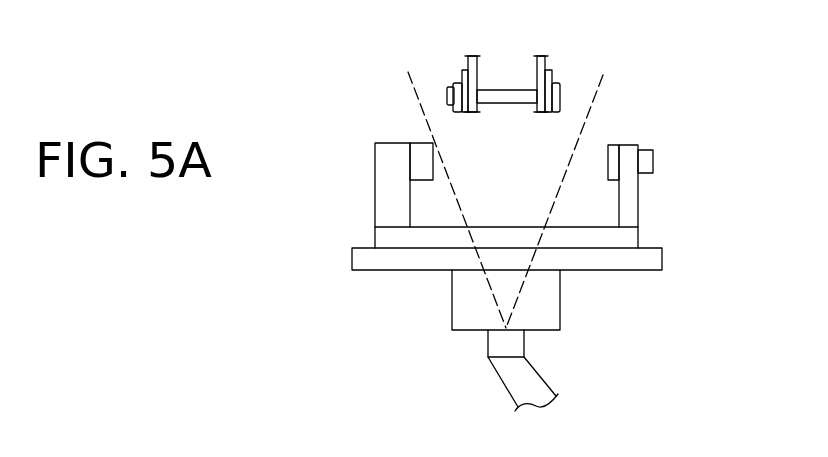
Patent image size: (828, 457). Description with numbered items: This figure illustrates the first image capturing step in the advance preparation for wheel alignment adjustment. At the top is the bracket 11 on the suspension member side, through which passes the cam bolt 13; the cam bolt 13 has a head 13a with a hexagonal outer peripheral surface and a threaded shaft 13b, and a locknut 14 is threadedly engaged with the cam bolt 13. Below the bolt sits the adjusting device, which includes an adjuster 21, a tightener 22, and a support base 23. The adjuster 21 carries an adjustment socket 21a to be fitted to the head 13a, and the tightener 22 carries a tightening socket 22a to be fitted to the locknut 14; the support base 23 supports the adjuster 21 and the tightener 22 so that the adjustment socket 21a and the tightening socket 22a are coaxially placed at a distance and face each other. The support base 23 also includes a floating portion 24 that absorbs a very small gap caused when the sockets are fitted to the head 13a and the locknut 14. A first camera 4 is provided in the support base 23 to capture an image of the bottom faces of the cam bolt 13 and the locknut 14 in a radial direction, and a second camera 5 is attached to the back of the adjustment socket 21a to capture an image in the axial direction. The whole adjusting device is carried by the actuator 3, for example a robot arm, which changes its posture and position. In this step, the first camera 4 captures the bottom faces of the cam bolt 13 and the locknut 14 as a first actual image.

The actuator 3 is at (541, 377).
The first camera 4 is at (487, 340).
The second camera 5 is at (655, 163).
The bracket 11 is at (507, 111).
The cam bolt 13 is at (507, 146).
The head 13a is at (554, 113).
The threaded shaft 13b is at (502, 106).
The locknut 14 is at (458, 80).
The adjuster 21 is at (641, 196).
The adjustment socket 21a is at (612, 144).
The tightener 22 is at (372, 191).
The tightening socket 22a is at (421, 142).
The support base 23 is at (566, 226).
The floating portion 24 is at (545, 300).